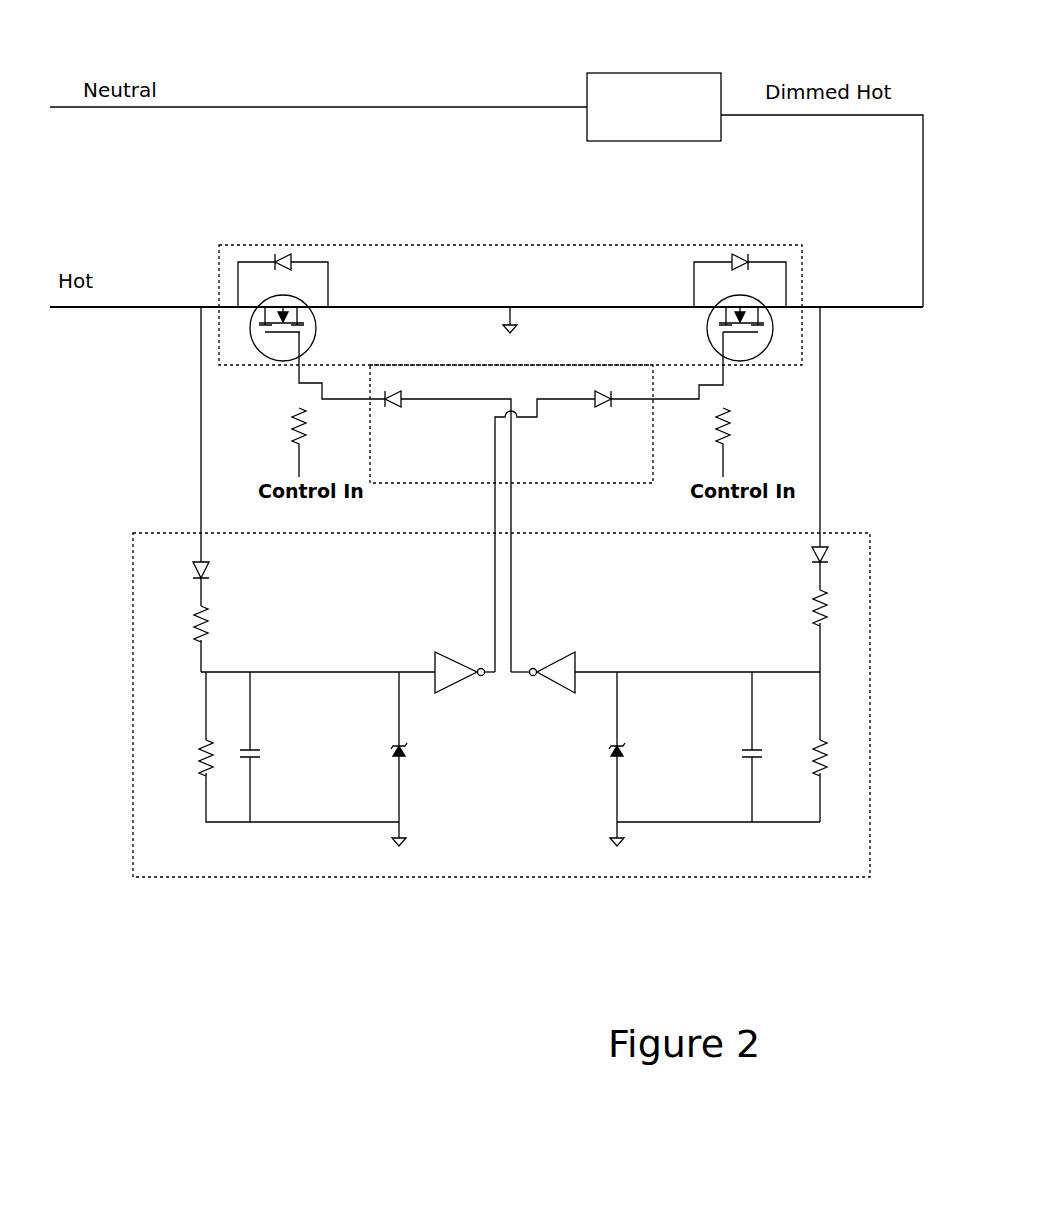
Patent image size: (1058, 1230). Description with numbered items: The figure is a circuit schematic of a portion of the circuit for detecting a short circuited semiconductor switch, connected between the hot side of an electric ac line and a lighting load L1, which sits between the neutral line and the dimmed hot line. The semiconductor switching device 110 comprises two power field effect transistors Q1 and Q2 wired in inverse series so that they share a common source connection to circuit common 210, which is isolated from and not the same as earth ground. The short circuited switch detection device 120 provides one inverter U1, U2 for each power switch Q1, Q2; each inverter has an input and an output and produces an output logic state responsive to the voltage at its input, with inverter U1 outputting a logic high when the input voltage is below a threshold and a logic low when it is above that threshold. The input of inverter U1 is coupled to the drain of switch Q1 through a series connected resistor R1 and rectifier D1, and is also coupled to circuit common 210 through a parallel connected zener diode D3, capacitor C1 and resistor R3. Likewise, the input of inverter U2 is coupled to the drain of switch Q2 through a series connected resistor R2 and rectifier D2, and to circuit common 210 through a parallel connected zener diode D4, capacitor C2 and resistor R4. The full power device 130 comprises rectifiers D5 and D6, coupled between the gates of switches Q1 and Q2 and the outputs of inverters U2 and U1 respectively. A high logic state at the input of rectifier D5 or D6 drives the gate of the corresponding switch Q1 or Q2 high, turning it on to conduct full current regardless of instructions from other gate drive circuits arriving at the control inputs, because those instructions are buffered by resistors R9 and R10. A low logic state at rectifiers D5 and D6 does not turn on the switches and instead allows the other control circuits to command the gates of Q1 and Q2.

The load L1 is at (654, 73).
The semiconductor switching device 110 is at (512, 245).
The short circuited switch detection device 120 is at (500, 686).
The full power device 130 is at (511, 425).
The circuit common 210 is at (534, 321).
The semiconductor power switch Q1 is at (295, 307).
The semiconductor power switch Q2 is at (729, 307).
The rectifier D1 is at (180, 572).
The rectifier D2 is at (841, 555).
The zener diode D3 is at (421, 759).
The zener diode D4 is at (601, 759).
The rectifier D5 is at (395, 389).
The rectifier D6 is at (601, 389).
The resistor R1 is at (180, 624).
The resistor R2 is at (841, 608).
The resistor R3 is at (190, 758).
The resistor R4 is at (836, 758).
The resistor R9 is at (317, 442).
The resistor R10 is at (746, 442).
The capacitor C1 is at (265, 747).
The capacitor C2 is at (735, 747).
The inverter U1 is at (465, 658).
The inverter U2 is at (551, 658).